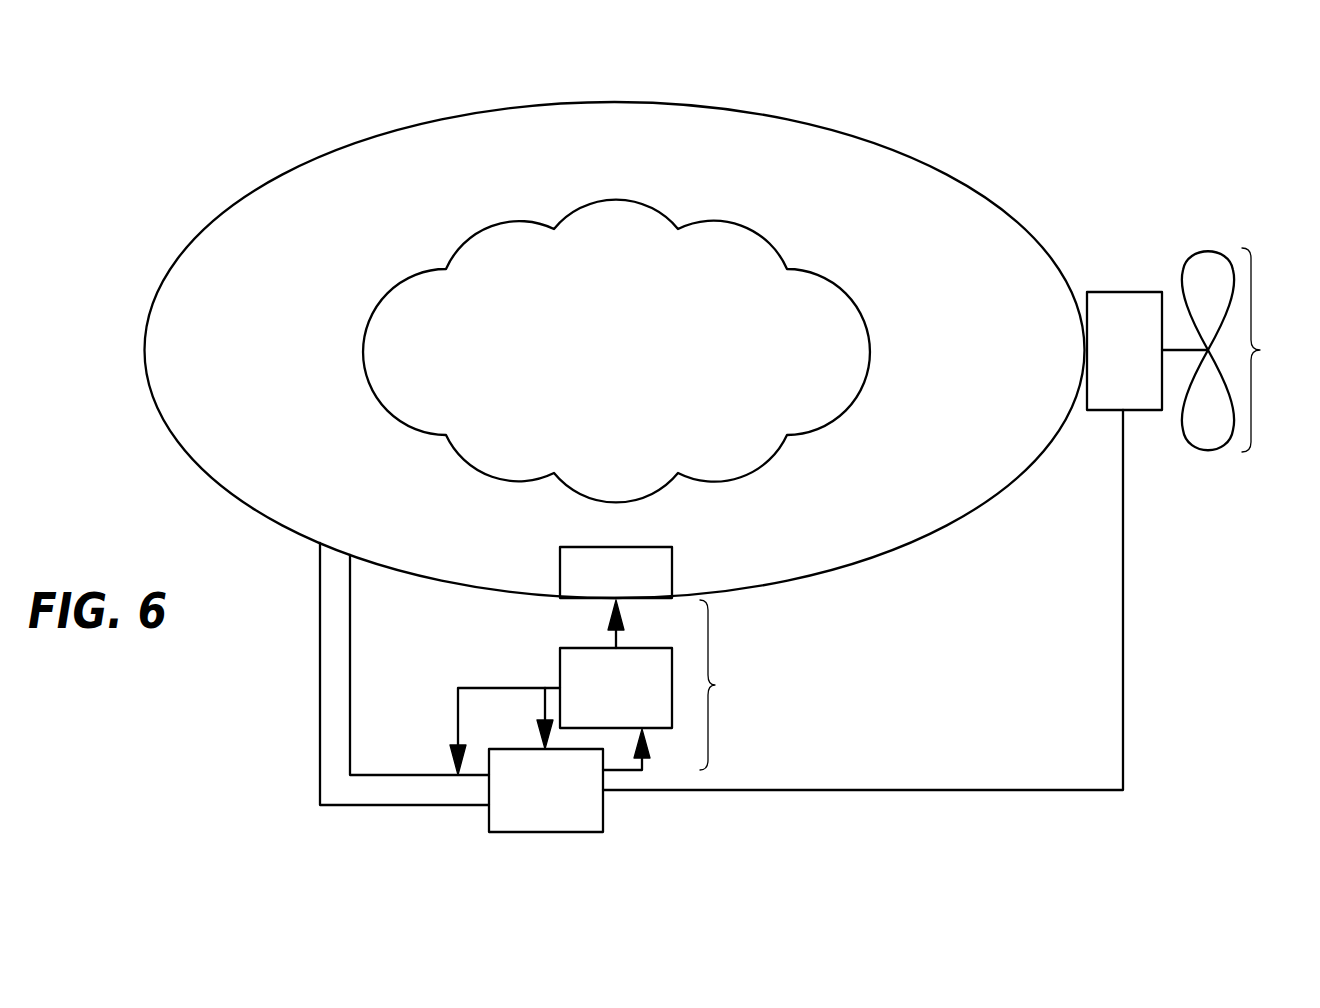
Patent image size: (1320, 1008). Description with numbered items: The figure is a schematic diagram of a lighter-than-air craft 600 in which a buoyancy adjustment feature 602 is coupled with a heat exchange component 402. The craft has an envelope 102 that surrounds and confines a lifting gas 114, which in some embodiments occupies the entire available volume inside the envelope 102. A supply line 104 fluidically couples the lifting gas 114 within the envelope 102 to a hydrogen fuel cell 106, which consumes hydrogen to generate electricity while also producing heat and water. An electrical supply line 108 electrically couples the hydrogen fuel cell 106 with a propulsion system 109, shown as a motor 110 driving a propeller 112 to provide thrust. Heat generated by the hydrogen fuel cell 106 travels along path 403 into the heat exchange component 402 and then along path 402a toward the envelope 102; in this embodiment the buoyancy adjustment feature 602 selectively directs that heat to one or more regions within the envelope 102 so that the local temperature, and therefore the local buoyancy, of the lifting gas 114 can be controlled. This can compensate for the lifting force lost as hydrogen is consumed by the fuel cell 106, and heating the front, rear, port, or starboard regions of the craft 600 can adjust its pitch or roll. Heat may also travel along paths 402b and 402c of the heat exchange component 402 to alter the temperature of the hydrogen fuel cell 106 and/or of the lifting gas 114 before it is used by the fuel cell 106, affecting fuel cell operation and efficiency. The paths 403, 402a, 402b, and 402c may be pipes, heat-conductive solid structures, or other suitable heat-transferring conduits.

The LTA craft 600 is at (1092, 92).
The envelope 102 is at (325, 153).
The lifting gas 114 is at (616, 351).
The motor 110 is at (1125, 291).
The propulsion system 109 is at (1245, 370).
The propeller 112 is at (1207, 450).
The buoyancy adjustment feature 602 is at (616, 572).
The heat exchange component 402 is at (566, 687).
The path 402a is at (612, 643).
The path 402b is at (457, 707).
The path 402c is at (542, 703).
The path 403 is at (617, 776).
The hydrogen fuel cell 106 is at (540, 833).
The supply line 104 is at (317, 710).
The electrical supply line 108 is at (928, 792).